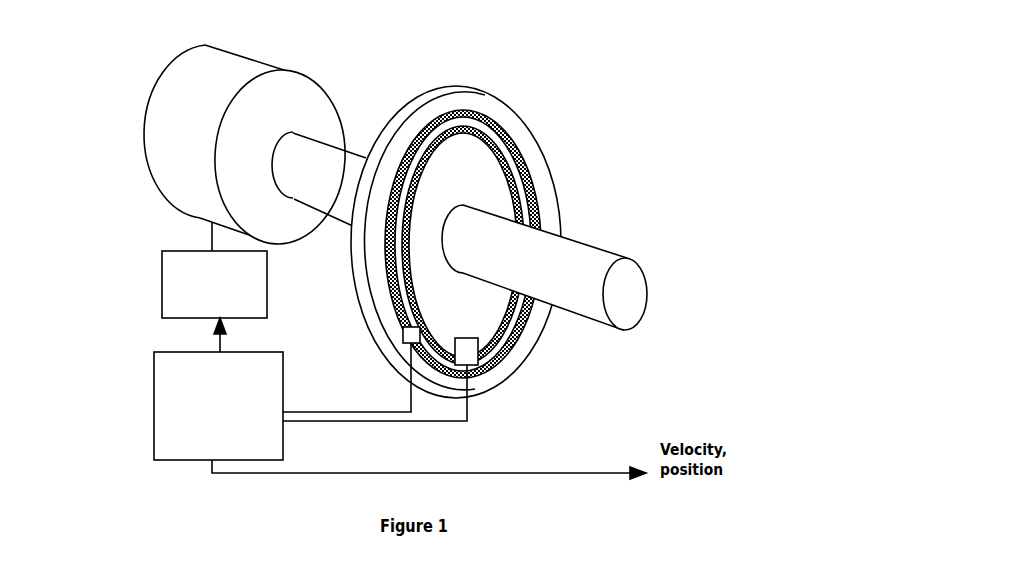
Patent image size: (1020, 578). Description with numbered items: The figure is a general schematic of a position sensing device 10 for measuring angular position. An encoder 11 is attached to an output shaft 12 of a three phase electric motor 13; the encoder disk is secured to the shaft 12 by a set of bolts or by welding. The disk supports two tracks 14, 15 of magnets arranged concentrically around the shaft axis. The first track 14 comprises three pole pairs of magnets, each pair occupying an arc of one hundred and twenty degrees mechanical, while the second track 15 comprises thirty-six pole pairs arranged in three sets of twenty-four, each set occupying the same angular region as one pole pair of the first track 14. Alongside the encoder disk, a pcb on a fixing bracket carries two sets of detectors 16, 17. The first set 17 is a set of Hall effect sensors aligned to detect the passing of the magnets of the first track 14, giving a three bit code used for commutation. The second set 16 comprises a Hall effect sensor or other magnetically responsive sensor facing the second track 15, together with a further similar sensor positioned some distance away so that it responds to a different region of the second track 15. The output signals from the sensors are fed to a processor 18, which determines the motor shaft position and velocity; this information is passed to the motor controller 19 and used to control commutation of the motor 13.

The position sensing device 10 is at (362, 228).
The encoder 11 is at (408, 100).
The output shaft 12 is at (647, 278).
The three phase electric motor 13 is at (150, 157).
The first track 14 is at (540, 202).
The second track 15 is at (515, 313).
The second set of detectors 16 is at (402, 338).
The first set of detectors 17 is at (490, 371).
The processor 18 is at (400, 398).
The motor controller 19 is at (214, 270).